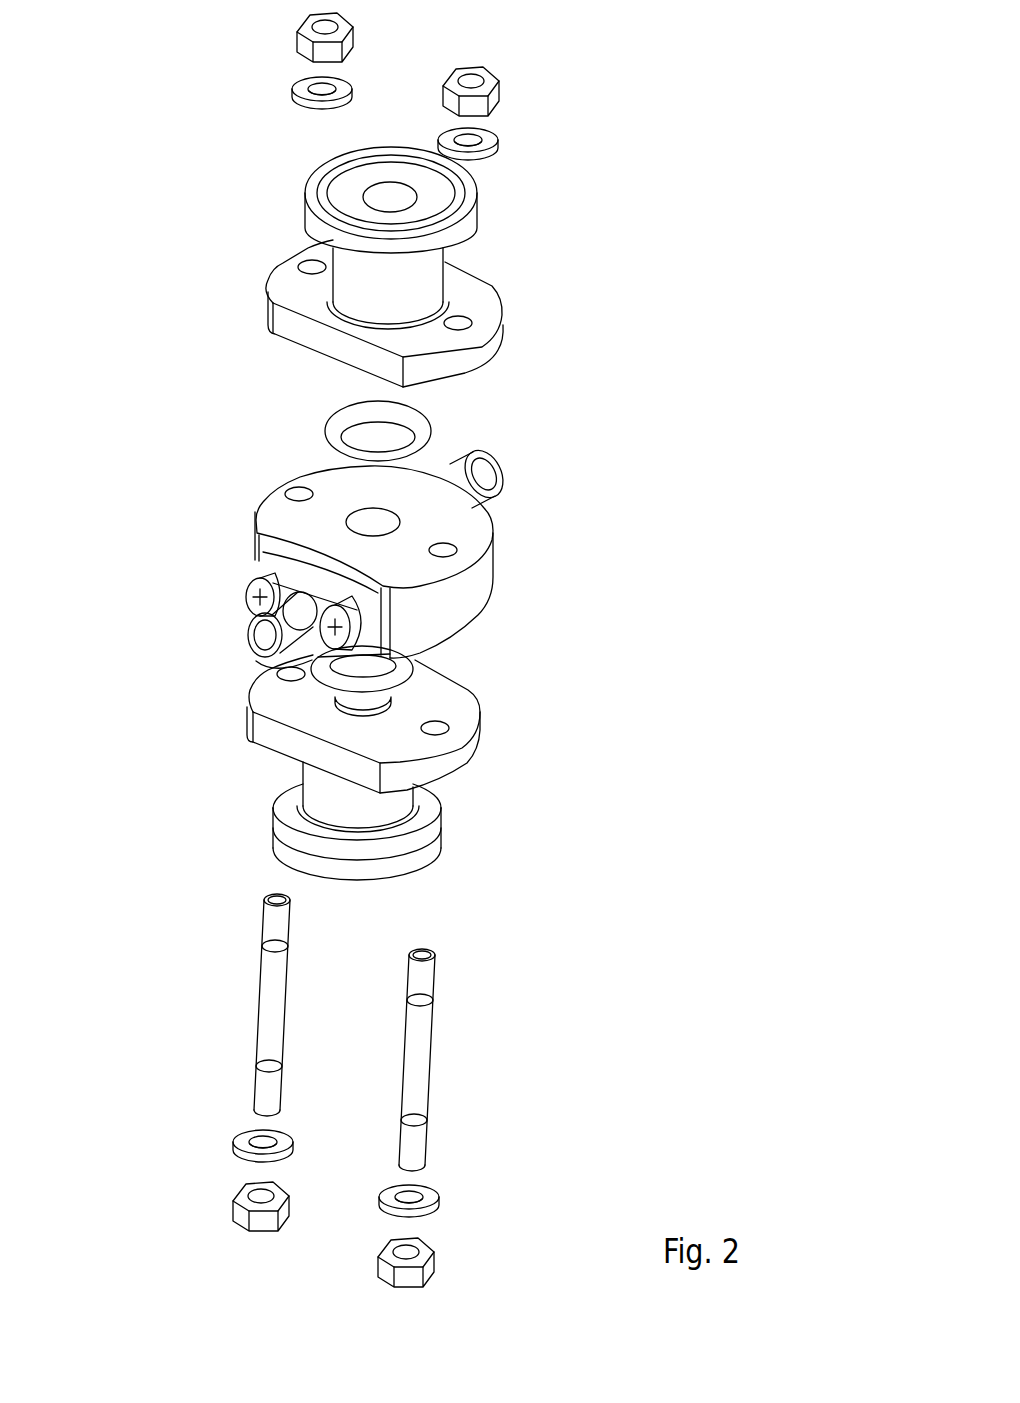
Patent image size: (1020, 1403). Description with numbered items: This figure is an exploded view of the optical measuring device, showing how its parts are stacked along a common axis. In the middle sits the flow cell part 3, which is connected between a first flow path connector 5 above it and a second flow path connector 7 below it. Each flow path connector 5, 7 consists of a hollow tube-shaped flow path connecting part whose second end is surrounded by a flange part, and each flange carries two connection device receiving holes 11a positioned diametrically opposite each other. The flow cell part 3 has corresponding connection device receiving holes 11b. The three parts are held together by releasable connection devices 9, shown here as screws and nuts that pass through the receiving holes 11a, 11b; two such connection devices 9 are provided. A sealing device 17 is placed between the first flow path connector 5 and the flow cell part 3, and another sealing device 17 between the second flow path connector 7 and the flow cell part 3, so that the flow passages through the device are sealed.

The flow cell part 3 is at (490, 572).
The first flow path connector 5 is at (543, 247).
The second flow path connector 7 is at (475, 828).
The releasable connection device 9 is at (215, 1053).
The connection device receiving holes 11a is at (305, 270).
The connection device receiving holes 11b is at (290, 498).
The sealing device 17 is at (327, 422).